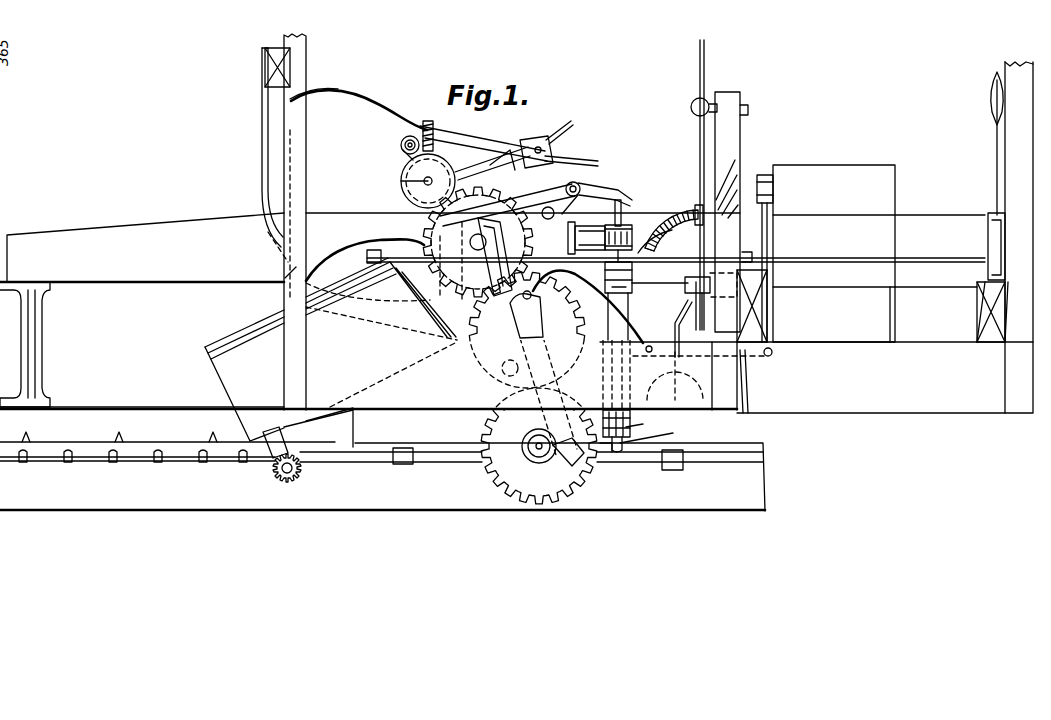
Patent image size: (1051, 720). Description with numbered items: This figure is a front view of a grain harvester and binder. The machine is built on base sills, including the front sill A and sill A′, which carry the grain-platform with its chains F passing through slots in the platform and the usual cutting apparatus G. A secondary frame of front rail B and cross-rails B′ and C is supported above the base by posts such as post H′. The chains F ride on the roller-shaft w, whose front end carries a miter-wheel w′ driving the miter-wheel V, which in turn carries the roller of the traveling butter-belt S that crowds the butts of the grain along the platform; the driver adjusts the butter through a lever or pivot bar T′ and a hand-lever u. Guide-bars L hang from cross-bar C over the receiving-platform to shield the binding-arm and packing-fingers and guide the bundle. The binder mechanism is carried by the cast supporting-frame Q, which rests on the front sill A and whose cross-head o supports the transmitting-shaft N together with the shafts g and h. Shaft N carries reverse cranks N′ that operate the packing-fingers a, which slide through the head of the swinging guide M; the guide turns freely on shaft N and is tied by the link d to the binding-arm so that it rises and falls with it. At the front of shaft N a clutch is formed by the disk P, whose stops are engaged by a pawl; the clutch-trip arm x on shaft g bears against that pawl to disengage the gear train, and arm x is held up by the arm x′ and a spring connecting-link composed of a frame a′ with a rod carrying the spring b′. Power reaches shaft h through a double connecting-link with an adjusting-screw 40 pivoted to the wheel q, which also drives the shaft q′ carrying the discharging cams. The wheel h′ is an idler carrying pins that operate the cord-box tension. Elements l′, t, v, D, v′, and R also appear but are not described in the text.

The cross-rail C is at (290, 65).
The guide-bars L is at (261, 133).
The post H′ is at (40, 327).
The main frame sill A′ is at (142, 388).
The butter-belt S is at (331, 351).
The tray edge l′ is at (368, 280).
The chains F is at (167, 432).
The cutting apparatus G is at (137, 470).
The miter-wheel V is at (283, 442).
The miter-wheel w′ is at (297, 471).
The front sill A is at (382, 460).
The packing-fingers a is at (358, 184).
The transmitting-shaft N is at (401, 170).
The double or reverse cranks N′ is at (436, 140).
The disk P is at (428, 181).
The swinging guide M is at (486, 153).
The shaft h is at (560, 185).
The link d is at (510, 201).
The clutch-trip arm x is at (541, 208).
The shaft g is at (625, 178).
The arm x′ is at (586, 224).
The binder-mechanism supporting-frame Q is at (676, 255).
The cross-head o is at (477, 243).
The adjusting-screw 40 is at (527, 330).
The idler wheel h′ is at (568, 296).
The wheel q is at (539, 446).
The shaft q′ is at (536, 459).
The curved rack t is at (674, 223).
The spring b′ is at (646, 250).
The frame a′ is at (646, 295).
The vertical rod v is at (697, 185).
The roller-shaft w is at (690, 107).
The plate D is at (730, 150).
The box R is at (834, 253).
The lever or pivot bar T′ is at (875, 289).
The cross-rail B′ is at (770, 297).
The bent lever v′ is at (704, 313).
The front rail B is at (816, 237).
The hand-lever u is at (988, 207).